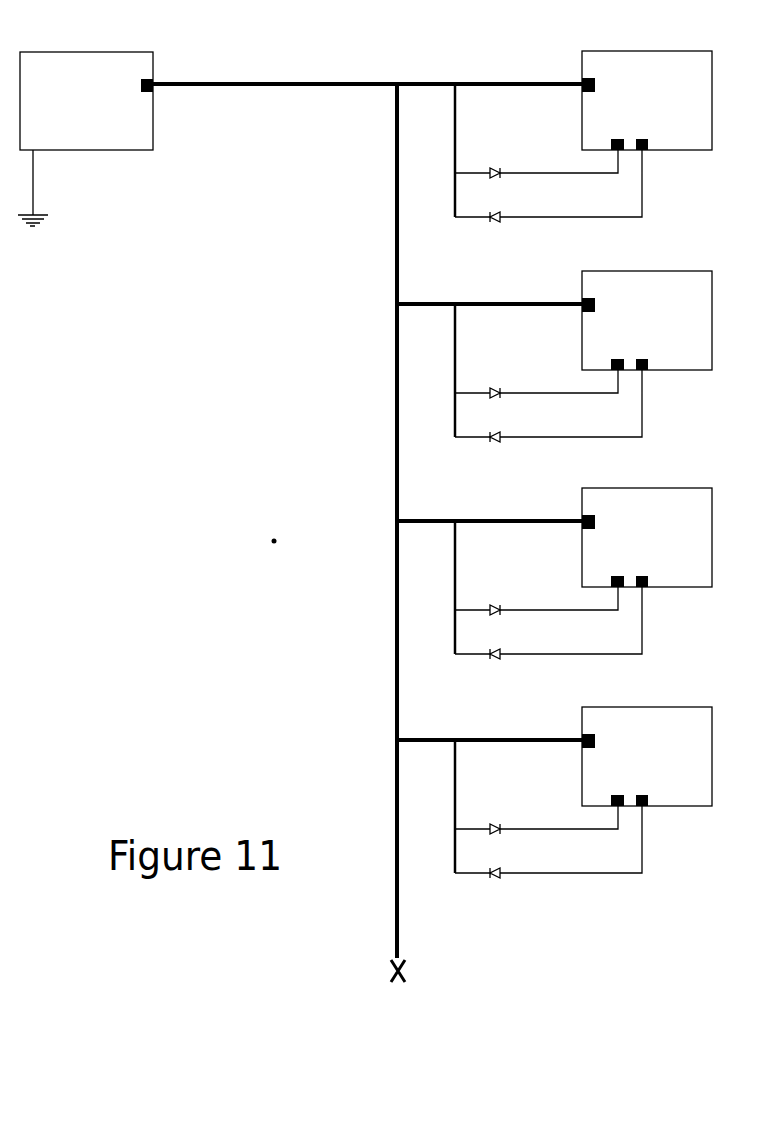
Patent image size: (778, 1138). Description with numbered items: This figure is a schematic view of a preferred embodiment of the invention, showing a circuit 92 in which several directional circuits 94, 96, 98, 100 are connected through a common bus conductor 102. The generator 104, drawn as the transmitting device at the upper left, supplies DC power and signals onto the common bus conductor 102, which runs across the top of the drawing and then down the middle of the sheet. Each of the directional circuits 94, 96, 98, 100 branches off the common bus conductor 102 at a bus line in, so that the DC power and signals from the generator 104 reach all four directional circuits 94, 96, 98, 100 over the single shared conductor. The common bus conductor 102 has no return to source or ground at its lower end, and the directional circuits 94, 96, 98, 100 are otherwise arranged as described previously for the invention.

The circuit 92 is at (273, 541).
The directional circuit 94 is at (453, 158).
The directional circuit 96 is at (453, 392).
The directional circuit 98 is at (455, 585).
The directional circuit 100 is at (452, 800).
The common bus conductor 102 is at (397, 470).
The generator 104 is at (115, 143).